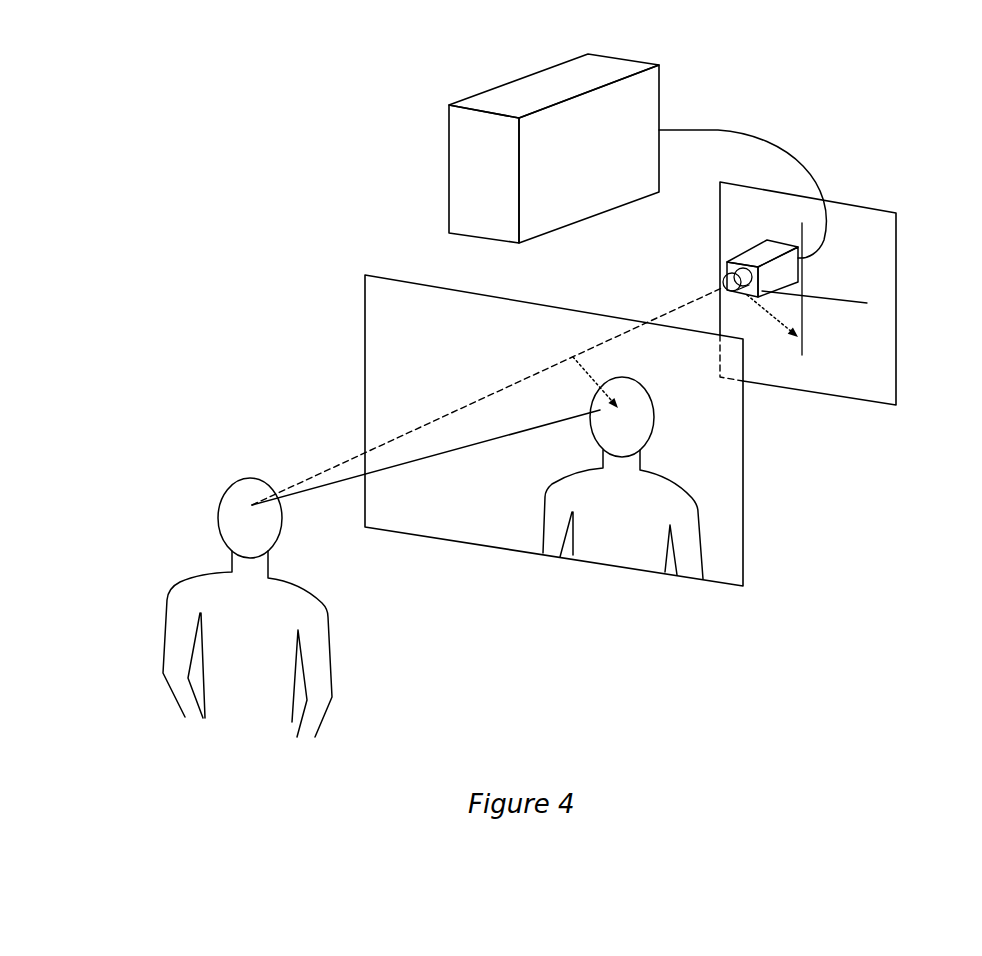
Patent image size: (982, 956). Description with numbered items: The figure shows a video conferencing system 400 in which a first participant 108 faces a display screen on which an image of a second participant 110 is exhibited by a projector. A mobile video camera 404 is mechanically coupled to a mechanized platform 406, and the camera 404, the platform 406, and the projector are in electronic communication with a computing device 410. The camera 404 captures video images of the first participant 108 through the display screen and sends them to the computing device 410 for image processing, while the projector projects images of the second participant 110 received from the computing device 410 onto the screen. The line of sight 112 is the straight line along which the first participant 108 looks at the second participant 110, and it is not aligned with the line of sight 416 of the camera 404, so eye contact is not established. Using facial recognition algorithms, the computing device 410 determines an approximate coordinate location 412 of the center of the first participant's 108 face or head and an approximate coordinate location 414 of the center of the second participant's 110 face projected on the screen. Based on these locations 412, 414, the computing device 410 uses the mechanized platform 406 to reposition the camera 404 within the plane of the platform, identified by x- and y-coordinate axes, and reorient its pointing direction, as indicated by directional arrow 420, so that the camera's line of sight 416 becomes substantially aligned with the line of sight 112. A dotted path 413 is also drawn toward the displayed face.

The video conferencing system 400 is at (171, 188).
The computing device 410 is at (576, 199).
The mobile video camera 404 is at (743, 253).
The mechanized platform 406 is at (899, 260).
The directional arrow 420 is at (779, 323).
The line of sight of the camera 416 is at (683, 305).
The gaze vector to displayed face 413 is at (593, 369).
The coordinate location of the second participant's face 414 is at (600, 410).
The line of sight 112 is at (313, 495).
The second participant 110 is at (625, 478).
The first participant 108 is at (247, 593).
The coordinate location of the first participant's face 412 is at (252, 503).